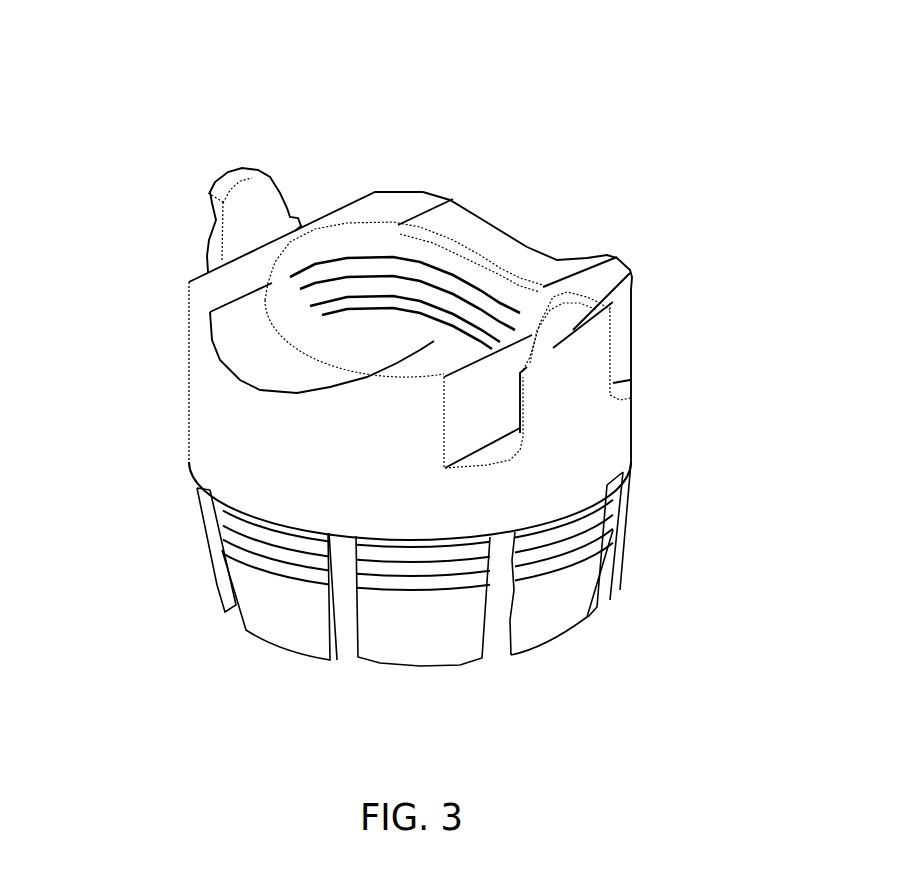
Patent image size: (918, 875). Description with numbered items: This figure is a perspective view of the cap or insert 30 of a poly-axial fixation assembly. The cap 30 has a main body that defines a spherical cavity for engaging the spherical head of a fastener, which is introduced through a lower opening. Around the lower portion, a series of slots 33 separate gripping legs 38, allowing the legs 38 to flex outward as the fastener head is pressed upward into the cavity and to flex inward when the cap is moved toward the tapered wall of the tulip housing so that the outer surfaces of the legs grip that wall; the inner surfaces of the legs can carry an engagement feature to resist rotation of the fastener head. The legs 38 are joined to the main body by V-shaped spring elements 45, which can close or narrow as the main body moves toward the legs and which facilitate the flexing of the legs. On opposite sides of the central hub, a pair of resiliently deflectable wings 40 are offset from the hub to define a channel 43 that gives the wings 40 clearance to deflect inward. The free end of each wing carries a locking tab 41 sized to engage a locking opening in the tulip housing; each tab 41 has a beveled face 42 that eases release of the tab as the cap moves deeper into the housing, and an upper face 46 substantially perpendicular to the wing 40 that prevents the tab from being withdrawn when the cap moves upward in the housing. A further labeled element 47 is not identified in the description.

The cap 30 is at (428, 186).
The slots 33 is at (422, 647).
The gripping legs 38 is at (540, 605).
The resiliently deflectable wings 40 is at (563, 380).
The locking tab 41 is at (600, 307).
The beveled face 42 is at (563, 333).
The channel 43 is at (493, 453).
The spring elements 45 is at (233, 532).
The upper face 46 is at (243, 178).
The flap 47 is at (278, 605).